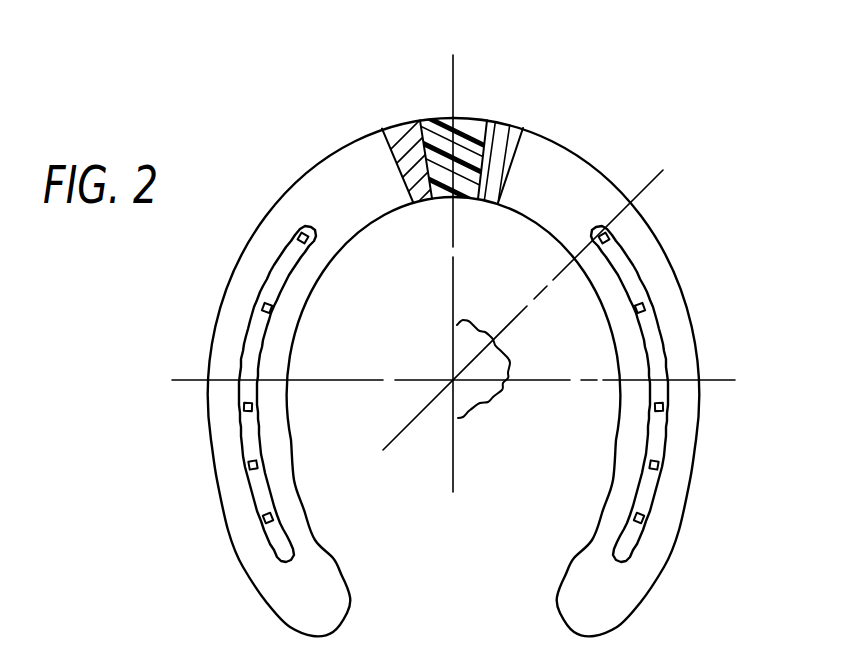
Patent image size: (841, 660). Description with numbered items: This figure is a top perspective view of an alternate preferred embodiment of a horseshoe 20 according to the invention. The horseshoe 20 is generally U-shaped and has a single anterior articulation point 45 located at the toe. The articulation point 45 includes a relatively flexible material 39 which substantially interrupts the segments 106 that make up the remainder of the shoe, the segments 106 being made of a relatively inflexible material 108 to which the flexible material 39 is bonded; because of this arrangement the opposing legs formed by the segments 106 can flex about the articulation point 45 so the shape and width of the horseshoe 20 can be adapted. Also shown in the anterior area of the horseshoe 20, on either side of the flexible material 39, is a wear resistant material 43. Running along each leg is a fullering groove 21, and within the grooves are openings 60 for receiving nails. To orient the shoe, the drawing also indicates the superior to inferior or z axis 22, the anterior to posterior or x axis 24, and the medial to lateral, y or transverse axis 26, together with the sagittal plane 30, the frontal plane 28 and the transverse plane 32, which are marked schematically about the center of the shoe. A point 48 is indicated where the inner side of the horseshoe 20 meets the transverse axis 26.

The horseshoe 20 is at (675, 246).
The fullering grooves 21 is at (253, 343).
The superior to inferior or z axis 22 is at (645, 177).
The anterior to posterior or x axis 24 is at (455, 77).
The medial to lateral, y or transverse axis 26 is at (710, 380).
The frontal plane 28 is at (506, 358).
The sagittal plane 30 is at (477, 328).
The transverse plane 32 is at (487, 404).
The relatively flexible material 39 is at (470, 128).
The wear resistant material 43 is at (387, 129).
The articulation point 45 is at (437, 127).
The inner edge point 48 is at (288, 380).
The openings for nails 60 is at (262, 308).
The segments 106 is at (228, 530).
The relatively inflexible material 108 is at (207, 406).